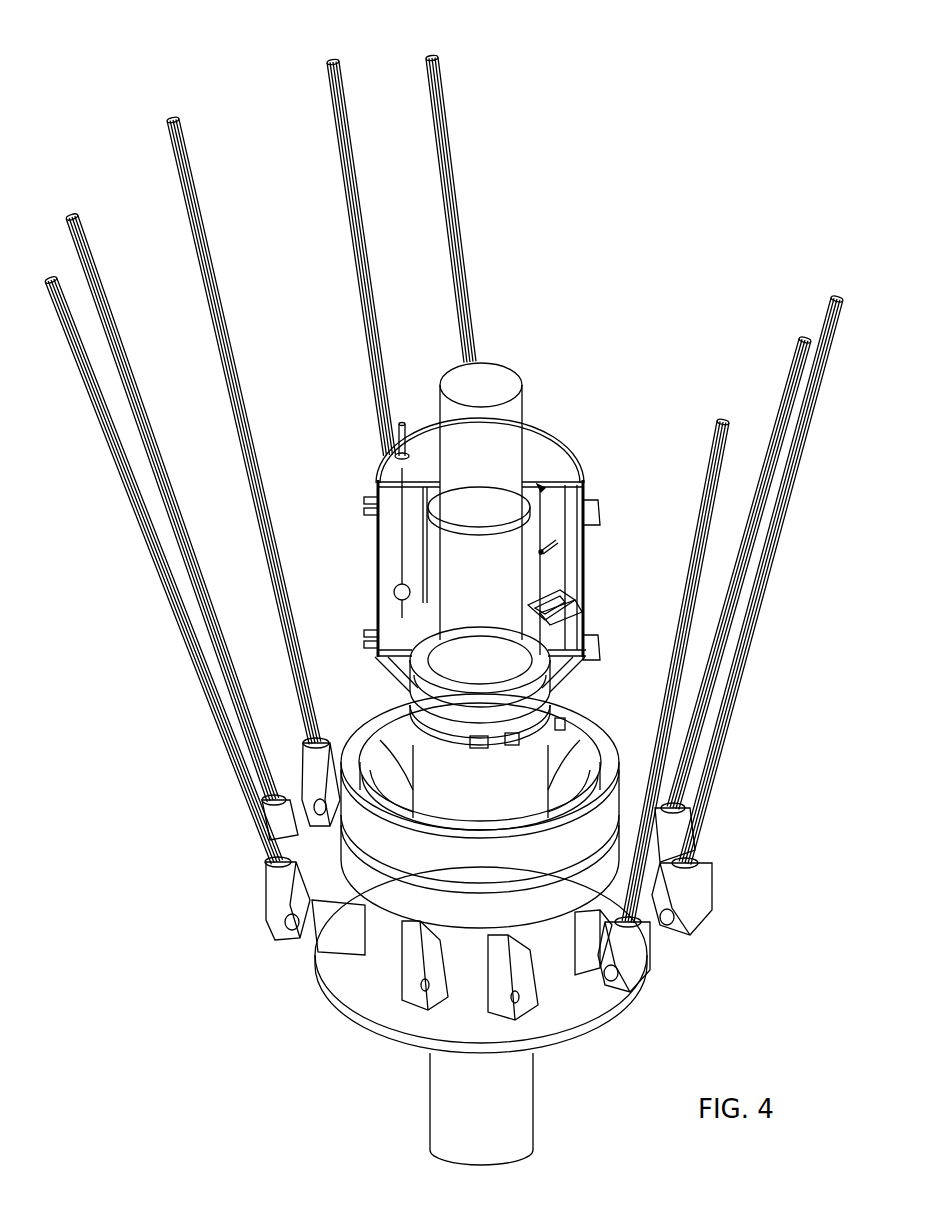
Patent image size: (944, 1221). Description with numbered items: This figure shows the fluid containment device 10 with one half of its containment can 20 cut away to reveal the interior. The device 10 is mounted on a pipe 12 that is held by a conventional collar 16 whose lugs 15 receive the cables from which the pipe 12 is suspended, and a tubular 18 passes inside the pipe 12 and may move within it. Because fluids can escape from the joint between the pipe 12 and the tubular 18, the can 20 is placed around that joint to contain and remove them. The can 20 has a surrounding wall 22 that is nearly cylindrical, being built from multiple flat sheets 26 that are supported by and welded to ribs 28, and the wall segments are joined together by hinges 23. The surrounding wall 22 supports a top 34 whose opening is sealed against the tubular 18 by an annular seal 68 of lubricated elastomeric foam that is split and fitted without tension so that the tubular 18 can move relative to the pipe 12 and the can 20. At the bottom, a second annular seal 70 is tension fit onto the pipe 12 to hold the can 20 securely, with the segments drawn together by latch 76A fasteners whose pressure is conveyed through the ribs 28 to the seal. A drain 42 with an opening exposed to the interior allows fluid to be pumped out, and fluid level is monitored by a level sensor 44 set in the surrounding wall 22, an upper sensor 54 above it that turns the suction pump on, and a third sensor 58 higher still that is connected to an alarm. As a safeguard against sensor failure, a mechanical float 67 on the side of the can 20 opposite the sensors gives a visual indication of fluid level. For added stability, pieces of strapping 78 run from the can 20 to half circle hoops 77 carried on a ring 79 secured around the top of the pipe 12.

The device 10 is at (633, 226).
The pipe 12 is at (510, 1100).
The lugs 15 is at (312, 950).
The collar 16 is at (555, 975).
The tubular 18 is at (513, 410).
The can 20 is at (300, 405).
The surrounding wall 22 is at (378, 462).
The hinges 23 is at (365, 503).
The flat sheets 26 is at (412, 555).
The ribs 28 is at (420, 530).
The top 34 is at (545, 455).
The drain 42 is at (570, 615).
The level sensor 44 is at (555, 605).
The upper sensor 54 is at (550, 552).
The third sensor 58 is at (540, 487).
The mechanical float 67 is at (404, 422).
The annular seal 68 is at (495, 515).
The annular seal 70 is at (425, 676).
The latch 76A is at (596, 515).
The half circle hoops 77 is at (560, 745).
The strapping 78 is at (380, 668).
The ring 79 is at (410, 720).